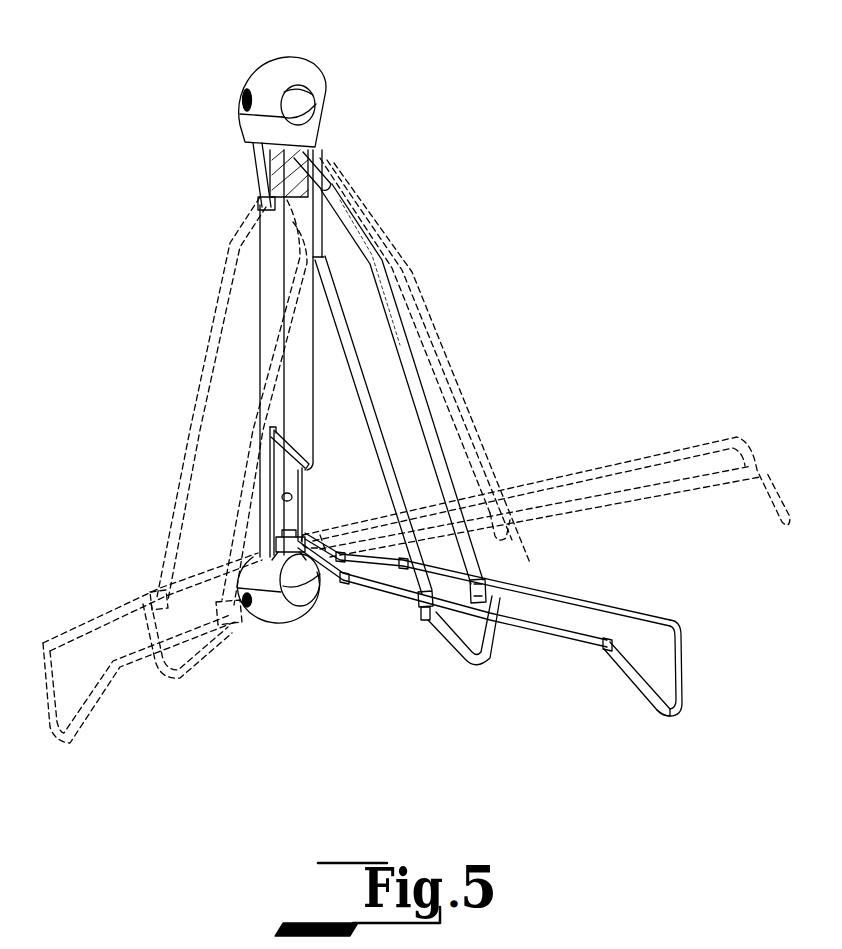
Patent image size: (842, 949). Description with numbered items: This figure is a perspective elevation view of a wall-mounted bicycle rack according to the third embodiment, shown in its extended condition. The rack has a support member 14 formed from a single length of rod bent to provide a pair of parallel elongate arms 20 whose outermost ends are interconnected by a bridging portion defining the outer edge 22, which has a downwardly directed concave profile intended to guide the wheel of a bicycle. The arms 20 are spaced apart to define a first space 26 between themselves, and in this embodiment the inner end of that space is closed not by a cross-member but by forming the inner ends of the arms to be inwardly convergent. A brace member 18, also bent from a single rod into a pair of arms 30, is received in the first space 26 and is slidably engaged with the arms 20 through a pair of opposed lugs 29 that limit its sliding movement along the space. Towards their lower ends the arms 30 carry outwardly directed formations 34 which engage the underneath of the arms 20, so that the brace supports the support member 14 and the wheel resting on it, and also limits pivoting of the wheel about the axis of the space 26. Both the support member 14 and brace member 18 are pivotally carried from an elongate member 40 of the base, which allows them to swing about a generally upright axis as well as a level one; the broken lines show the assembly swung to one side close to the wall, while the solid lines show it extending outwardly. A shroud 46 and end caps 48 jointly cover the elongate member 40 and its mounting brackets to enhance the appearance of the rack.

The support member 14 is at (630, 596).
The brace member 18 is at (418, 392).
The elongate arms 20 is at (560, 597).
The outer edge 22 is at (681, 694).
The first space 26 is at (620, 633).
The lugs 29 is at (470, 592).
The arms 30 is at (387, 455).
The outwardly directed formations 34 is at (461, 662).
The elongate member 40 is at (290, 477).
The shroud 46 is at (310, 331).
The end caps 48 is at (320, 67).